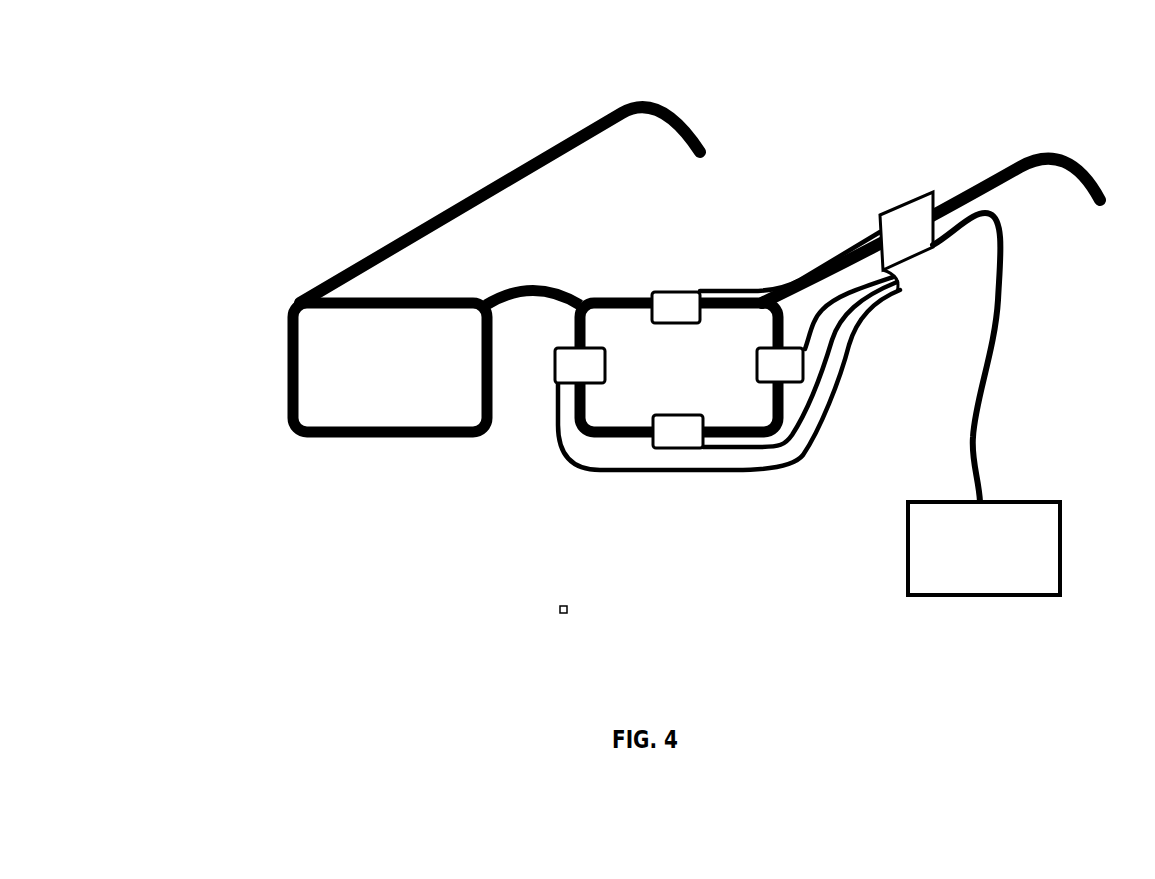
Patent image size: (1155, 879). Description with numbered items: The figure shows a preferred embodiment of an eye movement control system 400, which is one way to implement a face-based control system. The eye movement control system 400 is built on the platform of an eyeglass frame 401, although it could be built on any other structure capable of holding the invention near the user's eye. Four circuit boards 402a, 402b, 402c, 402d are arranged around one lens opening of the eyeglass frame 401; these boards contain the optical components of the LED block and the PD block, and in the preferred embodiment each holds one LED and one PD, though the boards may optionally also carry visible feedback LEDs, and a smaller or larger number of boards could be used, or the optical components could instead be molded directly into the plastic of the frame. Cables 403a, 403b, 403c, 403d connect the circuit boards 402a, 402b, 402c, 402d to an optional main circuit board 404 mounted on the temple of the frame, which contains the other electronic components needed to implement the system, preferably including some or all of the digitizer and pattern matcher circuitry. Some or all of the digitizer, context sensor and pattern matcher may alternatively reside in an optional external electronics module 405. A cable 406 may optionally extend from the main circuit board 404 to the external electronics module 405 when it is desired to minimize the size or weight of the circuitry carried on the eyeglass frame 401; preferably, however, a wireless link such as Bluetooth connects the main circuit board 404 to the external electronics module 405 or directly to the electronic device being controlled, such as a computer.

The eye movement control system 400 is at (314, 84).
The eyeglass frame 401 is at (493, 183).
The circuit board 402a is at (652, 293).
The circuit board 402b is at (757, 365).
The circuit board 402c is at (555, 350).
The circuit board 402d is at (673, 450).
The cable 403a is at (733, 288).
The cable 403b is at (830, 309).
The cable 403c is at (584, 460).
The cable 403d is at (733, 463).
The main circuit board 404 is at (894, 208).
The external electronics module 405 is at (908, 548).
The cable 406 is at (1000, 292).